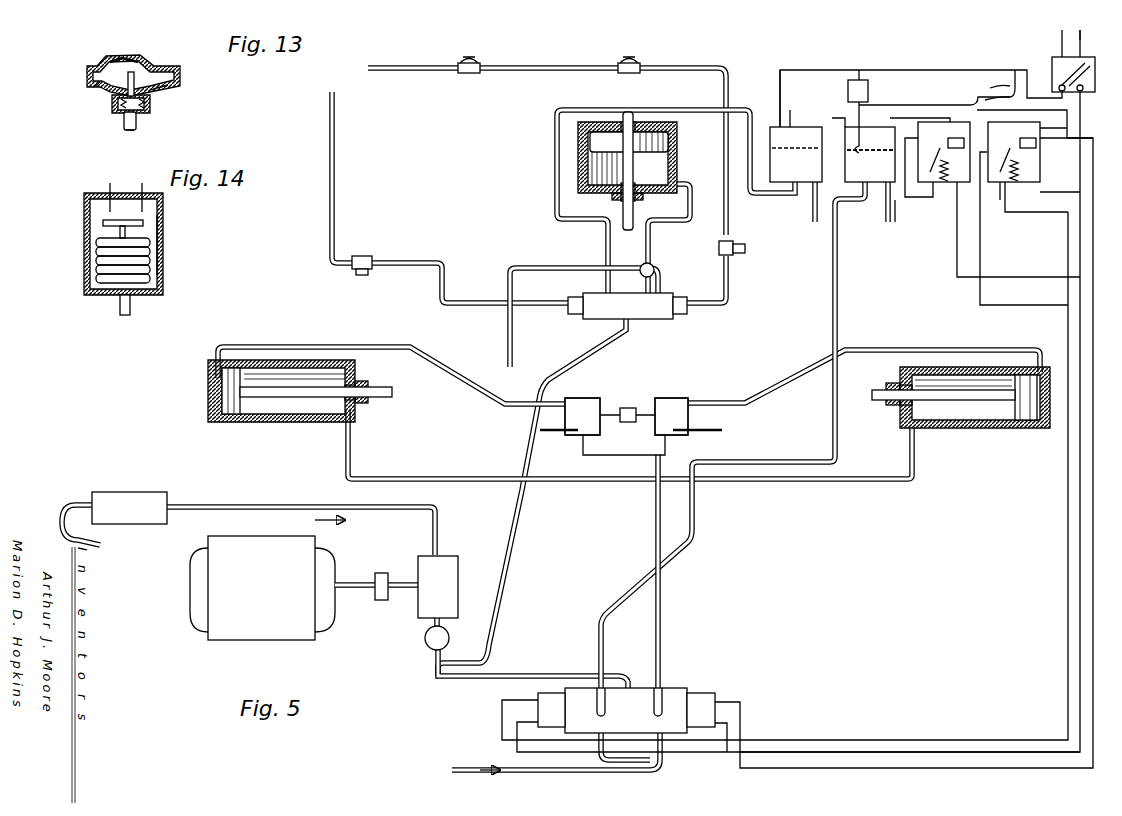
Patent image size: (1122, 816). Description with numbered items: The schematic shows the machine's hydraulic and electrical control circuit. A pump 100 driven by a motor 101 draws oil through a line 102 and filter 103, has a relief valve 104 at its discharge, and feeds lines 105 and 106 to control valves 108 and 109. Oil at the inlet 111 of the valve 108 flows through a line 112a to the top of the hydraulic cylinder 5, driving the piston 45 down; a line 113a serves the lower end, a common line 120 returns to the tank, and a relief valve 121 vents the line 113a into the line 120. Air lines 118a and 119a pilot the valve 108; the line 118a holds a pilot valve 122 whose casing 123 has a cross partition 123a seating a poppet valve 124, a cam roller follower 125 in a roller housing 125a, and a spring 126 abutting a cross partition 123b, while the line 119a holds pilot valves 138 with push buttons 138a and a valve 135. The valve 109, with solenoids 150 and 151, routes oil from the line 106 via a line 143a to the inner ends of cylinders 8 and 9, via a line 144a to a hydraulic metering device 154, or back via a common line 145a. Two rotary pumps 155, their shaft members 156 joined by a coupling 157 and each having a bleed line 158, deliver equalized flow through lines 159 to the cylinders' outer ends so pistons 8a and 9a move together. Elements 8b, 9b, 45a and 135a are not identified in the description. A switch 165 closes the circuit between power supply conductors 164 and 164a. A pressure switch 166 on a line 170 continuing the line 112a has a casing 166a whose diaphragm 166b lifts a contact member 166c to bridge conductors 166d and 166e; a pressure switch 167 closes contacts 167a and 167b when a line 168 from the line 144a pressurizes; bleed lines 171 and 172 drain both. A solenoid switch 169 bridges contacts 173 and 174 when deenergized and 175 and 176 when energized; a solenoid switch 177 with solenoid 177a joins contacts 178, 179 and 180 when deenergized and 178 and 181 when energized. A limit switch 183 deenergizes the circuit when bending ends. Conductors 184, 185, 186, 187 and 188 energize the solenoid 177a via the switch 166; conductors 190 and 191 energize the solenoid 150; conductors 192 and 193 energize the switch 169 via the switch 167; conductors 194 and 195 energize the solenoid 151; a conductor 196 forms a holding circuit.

In FIG. 13, the hydraulic cylinder 5 is at (131, 84).
In FIG. 5, the hydraulic cylinder 5 is at (578, 142).
In FIG. 5, the hydraulic cylinder 8 is at (208, 387).
In FIG. 5, the piston 8a is at (240, 410).
In FIG. 5, the piston rod 8b is at (378, 398).
In FIG. 5, the hydraulic cylinder 9 is at (940, 428).
In FIG. 5, the piston 9a is at (1028, 420).
In FIG. 5, the piston rod 9b is at (880, 400).
In FIG. 5, the piston 45 is at (652, 152).
In FIG. 5, the piston rod 45a is at (633, 210).
In FIG. 5, the pump 100 is at (448, 590).
In FIG. 5, the motor 101 is at (246, 638).
In FIG. 5, the fluid line 102 is at (302, 506).
In FIG. 5, the filter 103 is at (150, 482).
In FIG. 5, the automatic pressure relief valve 104 is at (425, 640).
In FIG. 5, the line 105 is at (516, 553).
In FIG. 5, the line 106 is at (546, 670).
In FIG. 5, the control valve 108 is at (650, 319).
In FIG. 5, the solenoid control valve 109 is at (665, 688).
In FIG. 5, the inlet 111 is at (585, 355).
In FIG. 5, the line 112a is at (605, 250).
In FIG. 5, the line 113a is at (649, 245).
In FIG. 5, the air line 118a is at (336, 156).
In FIG. 5, the air line 119a is at (727, 160).
In FIG. 5, the common line 120 is at (509, 350).
In FIG. 5, the pressure relief valve 121 is at (654, 272).
In FIG. 13, the cam actuated pilot valve 122 is at (195, 52).
In FIG. 5, the cam actuated pilot valve 122 is at (366, 256).
In FIG. 13, the casing 123 is at (158, 90).
In FIG. 13, the inner cross partition 123a is at (136, 60).
In FIG. 13, the cross partition 123b is at (150, 107).
In FIG. 13, the poppet type valve 124 is at (96, 90).
In FIG. 13, the cam roller follower 125 is at (137, 125).
In FIG. 13, the cylindrical roller housing 125a is at (127, 128).
In FIG. 13, the spring 126 is at (118, 107).
In FIG. 5, the pilot valve 135 is at (733, 242).
In FIG. 5, the fitting nut 135a is at (746, 248).
In FIG. 5, the pilot valves 138 is at (458, 72).
In FIG. 5, the push buttons 138a is at (490, 42).
In FIG. 5, the line 143a is at (665, 598).
In FIG. 5, the line 144a is at (630, 590).
In FIG. 5, the common line 145a is at (500, 773).
In FIG. 5, the solenoid 150 is at (545, 700).
In FIG. 5, the solenoid 151 is at (705, 700).
In FIG. 5, the hydraulic metering device 154 is at (690, 400).
In FIG. 5, the rotary pumps 155 is at (600, 400).
In FIG. 5, the shaft members 156 is at (640, 430).
In FIG. 5, the coupling 157 is at (625, 407).
In FIG. 5, the bleed line 158 is at (552, 433).
In FIG. 5, the lines 159 is at (895, 350).
In FIG. 5, the power supply conductor 164 is at (1060, 45).
In FIG. 5, the power supply conductor 164a is at (1090, 28).
In FIG. 5, the switch 165 is at (1052, 70).
In FIG. 14, the automatic switch 166 is at (168, 290).
In FIG. 5, the automatic switch 166 is at (796, 154).
In FIG. 14, the casing 166a is at (160, 242).
In FIG. 14, the flexible diaphragm 166b is at (96, 257).
In FIG. 14, the contact member 166c is at (103, 223).
In FIG. 14, the electrical conductor 166d is at (108, 192).
In FIG. 5, the electrical conductor 166d is at (790, 112).
In FIG. 14, the electrical conductor 166e is at (160, 204).
In FIG. 5, the electrical conductor 166e is at (780, 100).
In FIG. 5, the pressure actuated switch 167 is at (870, 154).
In FIG. 5, the contact point 167a is at (848, 150).
In FIG. 5, the contact point 167b is at (873, 135).
In FIG. 5, the line 168 is at (840, 274).
In FIG. 5, the solenoid switch 169 is at (280, 347).
In FIG. 5, the hydraulic line 170 is at (684, 108).
In FIG. 5, the bleed line 171 is at (812, 215).
In FIG. 5, the bleed line 172 is at (886, 218).
In FIG. 5, the contact line 173 is at (934, 150).
In FIG. 5, the contact line 174 is at (946, 120).
In FIG. 5, the contact point 175 is at (934, 160).
In FIG. 5, the contact point 176 is at (961, 153).
In FIG. 5, the solenoid switch 177 is at (1008, 192).
In FIG. 5, the solenoid 177a is at (1064, 210).
In FIG. 5, the contact point 178 is at (1036, 150).
In FIG. 5, the contact point 179 is at (1014, 145).
In FIG. 5, the contact point 180 is at (1040, 118).
In FIG. 5, the contact point 181 is at (1002, 159).
In FIG. 5, the limit switch 183 is at (848, 88).
In FIG. 5, the conductor 184 is at (946, 70).
In FIG. 5, the conductor 185 is at (840, 120).
In FIG. 5, the conductor 186 is at (1010, 88).
In FIG. 5, the conductor 187 is at (1060, 212).
In FIG. 5, the conductor 188 is at (1056, 184).
In FIG. 5, the conductor 190 is at (980, 262).
In FIG. 5, the conductor 191 is at (924, 752).
In FIG. 5, the conductor 192 is at (895, 220).
In FIG. 5, the conductor 193 is at (957, 252).
In FIG. 5, the conductor 194 is at (1093, 592).
In FIG. 5, the conductor 195 is at (740, 718).
In FIG. 5, the conductor 196 is at (1010, 102).